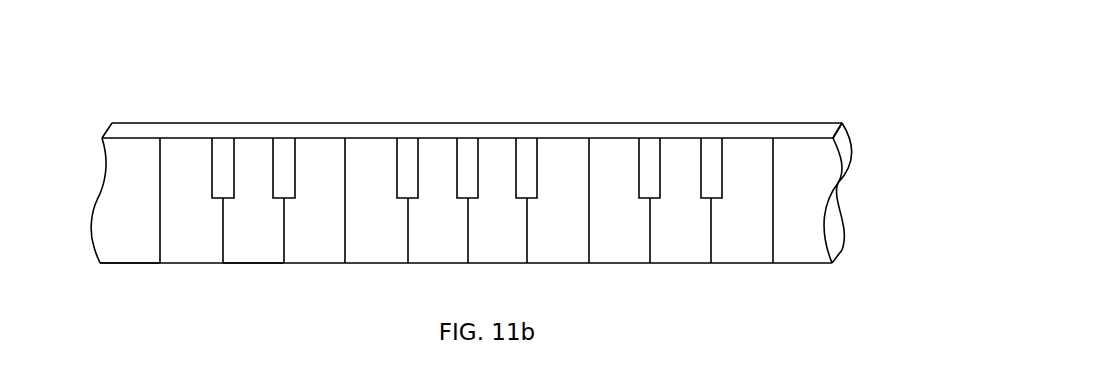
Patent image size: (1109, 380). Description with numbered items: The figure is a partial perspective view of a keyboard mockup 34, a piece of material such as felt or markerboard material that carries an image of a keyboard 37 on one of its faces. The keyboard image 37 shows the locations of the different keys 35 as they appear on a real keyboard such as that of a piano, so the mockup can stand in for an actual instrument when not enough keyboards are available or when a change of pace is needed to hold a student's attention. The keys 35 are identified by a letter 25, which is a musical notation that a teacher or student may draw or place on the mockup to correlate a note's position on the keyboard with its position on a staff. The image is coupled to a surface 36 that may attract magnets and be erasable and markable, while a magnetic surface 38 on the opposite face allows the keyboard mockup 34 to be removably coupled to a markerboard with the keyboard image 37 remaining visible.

The letter 25 is at (430, 172).
The keyboard mockup 34 is at (862, 98).
The keys 35 is at (258, 250).
The surface 36 is at (132, 252).
The image of a keyboard 37 is at (465, 163).
The magnetic surface 38 is at (855, 148).